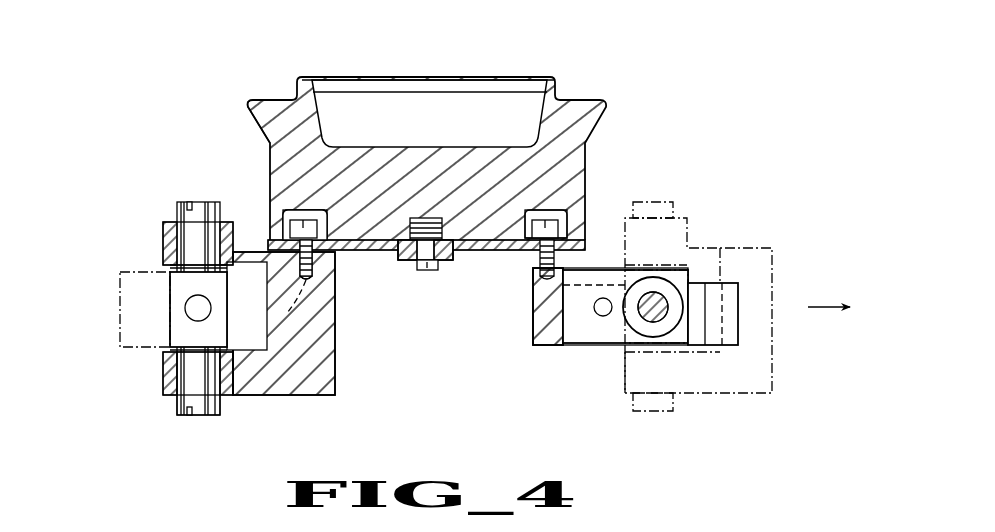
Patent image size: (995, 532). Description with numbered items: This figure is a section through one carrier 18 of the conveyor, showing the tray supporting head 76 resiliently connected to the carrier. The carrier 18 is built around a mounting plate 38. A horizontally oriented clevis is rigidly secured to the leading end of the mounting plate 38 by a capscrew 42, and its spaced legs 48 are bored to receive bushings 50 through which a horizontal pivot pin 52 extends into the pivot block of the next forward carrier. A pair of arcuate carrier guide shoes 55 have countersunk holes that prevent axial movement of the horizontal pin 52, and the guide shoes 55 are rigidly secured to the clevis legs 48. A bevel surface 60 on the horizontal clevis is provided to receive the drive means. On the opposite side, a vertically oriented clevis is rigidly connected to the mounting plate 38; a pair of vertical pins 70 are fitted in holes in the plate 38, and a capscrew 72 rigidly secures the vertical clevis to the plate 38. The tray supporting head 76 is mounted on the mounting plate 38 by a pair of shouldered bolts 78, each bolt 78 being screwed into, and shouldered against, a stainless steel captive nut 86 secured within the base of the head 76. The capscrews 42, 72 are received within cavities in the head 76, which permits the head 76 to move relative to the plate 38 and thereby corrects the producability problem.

The carrier 18 is at (600, 73).
The tray supporting head 76 is at (263, 97).
The capscrew 72 is at (321, 210).
The capscrew 42 is at (540, 222).
The captive nut 86 is at (413, 222).
The shouldered bolt 78 is at (418, 268).
The mounting plate 38 is at (353, 250).
The vertical pin 70 is at (305, 273).
The bevel surface 60 is at (537, 327).
The horizontal pivot pin 52 is at (658, 318).
The bushing 50 is at (668, 293).
The spaced legs 48 is at (688, 298).
The arcuate carrier guide shoe 55 is at (735, 338).